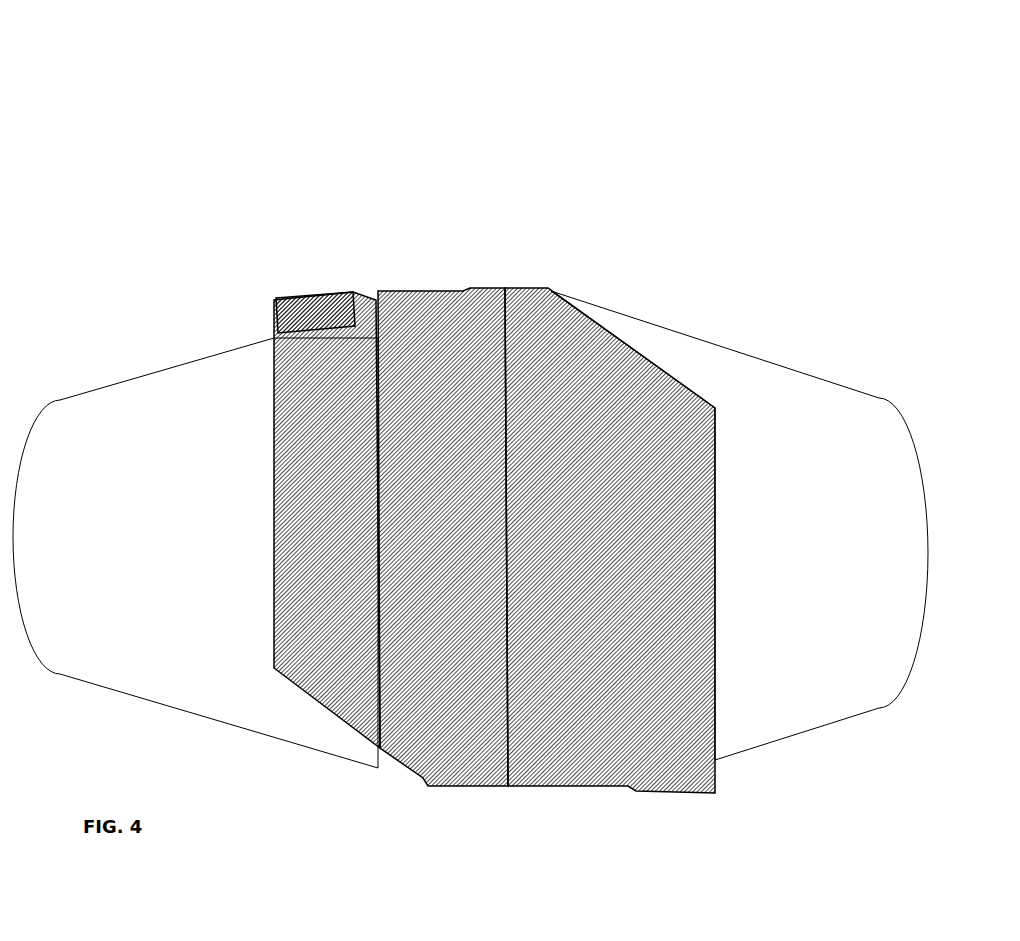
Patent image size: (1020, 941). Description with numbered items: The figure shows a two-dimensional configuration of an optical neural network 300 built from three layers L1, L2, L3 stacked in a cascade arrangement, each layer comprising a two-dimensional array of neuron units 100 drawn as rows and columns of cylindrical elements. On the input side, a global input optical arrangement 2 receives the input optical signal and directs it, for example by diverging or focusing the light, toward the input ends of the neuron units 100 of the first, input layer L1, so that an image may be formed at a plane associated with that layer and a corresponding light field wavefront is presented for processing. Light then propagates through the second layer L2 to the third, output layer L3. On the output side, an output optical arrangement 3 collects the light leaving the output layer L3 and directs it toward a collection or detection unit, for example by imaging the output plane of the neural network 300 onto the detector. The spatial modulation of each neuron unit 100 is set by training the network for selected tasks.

The neural network 300 is at (444, 407).
The neuron unit 100 is at (270, 287).
The first layer L1 is at (289, 402).
The second layer L2 is at (407, 277).
The third layer L3 is at (500, 275).
The global input optical arrangement 2 is at (46, 392).
The output optical arrangement 3 is at (870, 390).